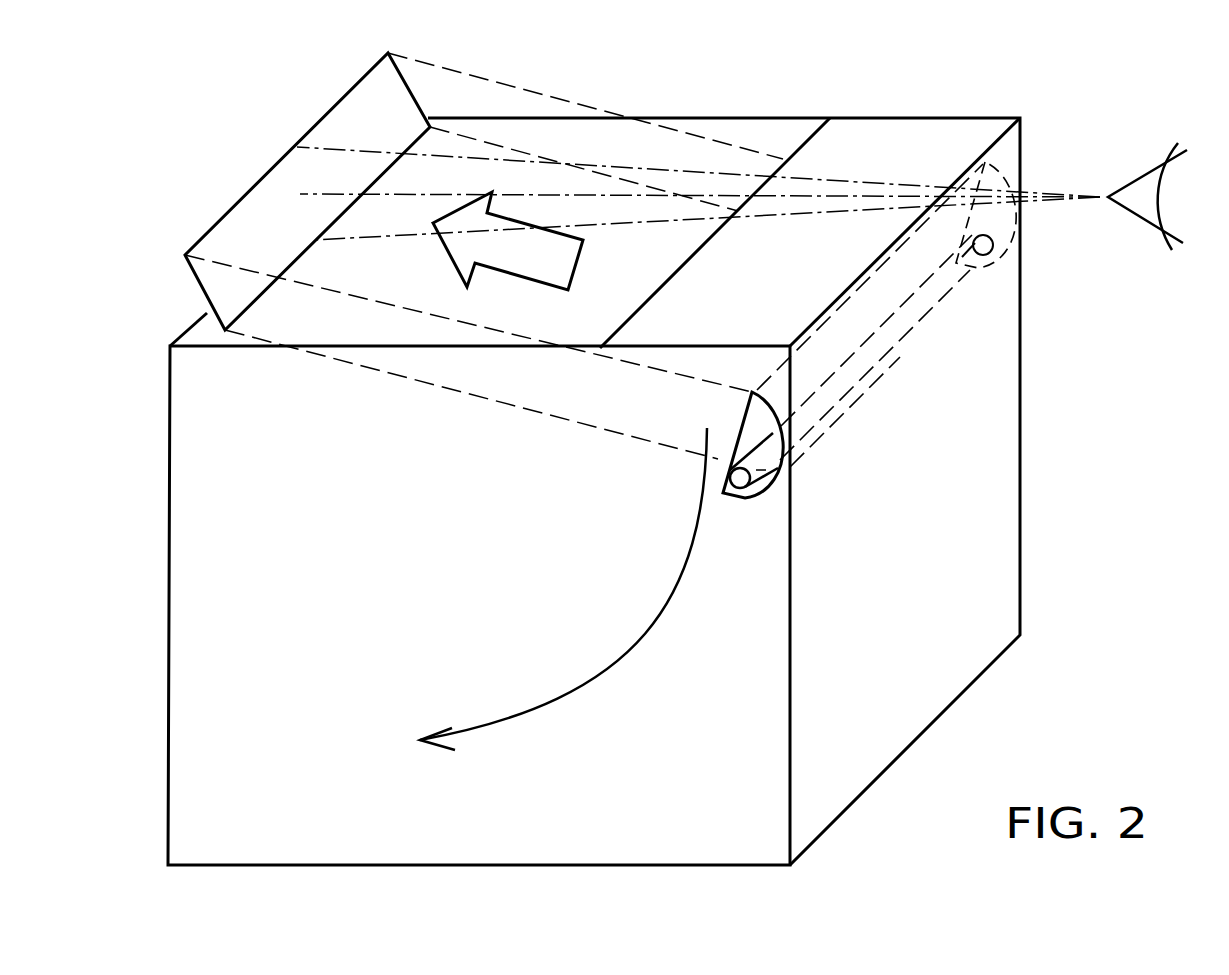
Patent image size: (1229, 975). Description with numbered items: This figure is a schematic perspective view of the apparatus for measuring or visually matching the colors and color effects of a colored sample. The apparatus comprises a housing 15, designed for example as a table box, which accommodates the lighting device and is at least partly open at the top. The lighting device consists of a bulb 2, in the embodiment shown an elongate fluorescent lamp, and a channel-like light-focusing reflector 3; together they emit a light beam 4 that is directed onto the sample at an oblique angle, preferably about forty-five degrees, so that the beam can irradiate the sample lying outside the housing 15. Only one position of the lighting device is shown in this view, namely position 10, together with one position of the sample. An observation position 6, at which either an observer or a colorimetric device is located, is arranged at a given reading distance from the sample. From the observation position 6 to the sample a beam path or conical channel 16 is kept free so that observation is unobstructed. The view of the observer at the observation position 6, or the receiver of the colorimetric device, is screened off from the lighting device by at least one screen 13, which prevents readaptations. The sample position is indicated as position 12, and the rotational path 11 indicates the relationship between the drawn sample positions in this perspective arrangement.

The bulb 2 is at (733, 498).
The light-focusing reflector 3 is at (768, 492).
The light beam 4 is at (508, 241).
The observation position 6 is at (1172, 250).
The position of the lighting device 10 is at (752, 432).
The path of rotation 11 is at (563, 589).
The plate 12 is at (398, 90).
The screen 13 is at (847, 265).
The housing 15 is at (990, 532).
The beam path or conical channel 16 is at (578, 195).